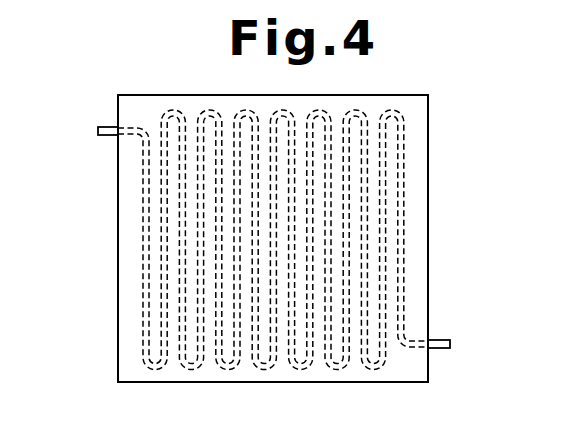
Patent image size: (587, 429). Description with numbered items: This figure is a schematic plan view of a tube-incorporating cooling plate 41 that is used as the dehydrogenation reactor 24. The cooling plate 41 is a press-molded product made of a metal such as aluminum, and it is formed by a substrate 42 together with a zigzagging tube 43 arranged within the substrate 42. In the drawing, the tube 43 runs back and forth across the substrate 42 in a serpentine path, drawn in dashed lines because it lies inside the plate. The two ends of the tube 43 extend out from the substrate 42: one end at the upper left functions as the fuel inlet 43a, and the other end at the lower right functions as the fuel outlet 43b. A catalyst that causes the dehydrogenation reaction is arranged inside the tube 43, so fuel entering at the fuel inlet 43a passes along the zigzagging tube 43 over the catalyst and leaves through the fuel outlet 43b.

The dehydrogenation reactor 24 is at (102, 217).
The cooling plate 41 is at (442, 127).
The substrate 42 is at (417, 188).
The zigzagging tube 43 is at (143, 286).
The fuel inlet 43a is at (100, 127).
The fuel outlet 43b is at (443, 340).